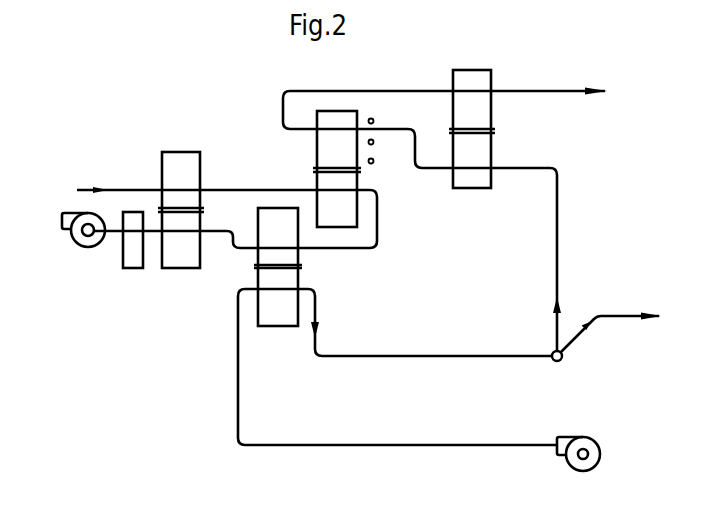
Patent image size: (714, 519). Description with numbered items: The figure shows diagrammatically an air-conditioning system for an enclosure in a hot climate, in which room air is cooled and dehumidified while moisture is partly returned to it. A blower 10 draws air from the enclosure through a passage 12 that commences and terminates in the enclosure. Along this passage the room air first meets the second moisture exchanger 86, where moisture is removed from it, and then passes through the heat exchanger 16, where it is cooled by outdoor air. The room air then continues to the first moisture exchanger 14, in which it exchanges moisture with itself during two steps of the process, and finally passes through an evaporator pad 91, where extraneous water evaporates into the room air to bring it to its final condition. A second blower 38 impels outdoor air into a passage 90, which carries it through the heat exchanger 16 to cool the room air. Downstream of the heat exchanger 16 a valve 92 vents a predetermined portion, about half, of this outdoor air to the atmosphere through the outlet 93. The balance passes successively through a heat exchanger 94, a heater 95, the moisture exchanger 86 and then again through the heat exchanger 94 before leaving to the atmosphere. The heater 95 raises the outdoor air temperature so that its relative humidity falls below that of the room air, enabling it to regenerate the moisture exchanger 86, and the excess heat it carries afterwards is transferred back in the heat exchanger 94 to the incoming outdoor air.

The blower 10 is at (80, 242).
The passage 12 is at (378, 227).
The first moisture exchanger 14 is at (183, 157).
The heat exchanger 16 is at (293, 305).
The blower 38 is at (600, 442).
The second moisture exchanger 86 is at (323, 183).
The passage 90 is at (335, 446).
The evaporator pad 91 is at (134, 265).
The valve 92 is at (551, 352).
The outlet 93 is at (582, 329).
The heat exchanger 94 is at (476, 185).
The heater 95 is at (373, 117).